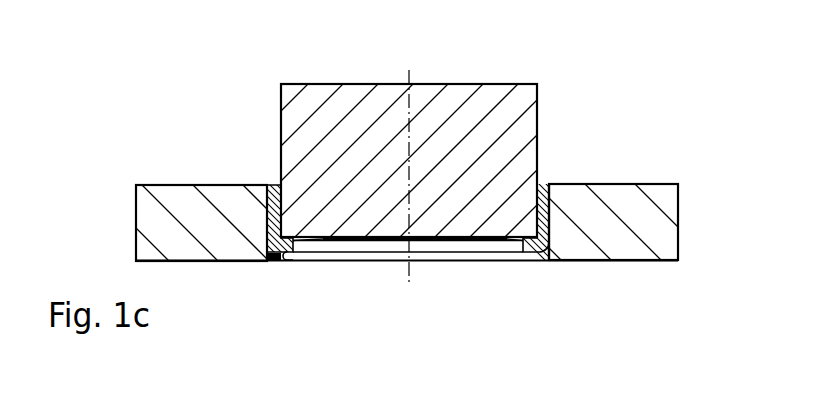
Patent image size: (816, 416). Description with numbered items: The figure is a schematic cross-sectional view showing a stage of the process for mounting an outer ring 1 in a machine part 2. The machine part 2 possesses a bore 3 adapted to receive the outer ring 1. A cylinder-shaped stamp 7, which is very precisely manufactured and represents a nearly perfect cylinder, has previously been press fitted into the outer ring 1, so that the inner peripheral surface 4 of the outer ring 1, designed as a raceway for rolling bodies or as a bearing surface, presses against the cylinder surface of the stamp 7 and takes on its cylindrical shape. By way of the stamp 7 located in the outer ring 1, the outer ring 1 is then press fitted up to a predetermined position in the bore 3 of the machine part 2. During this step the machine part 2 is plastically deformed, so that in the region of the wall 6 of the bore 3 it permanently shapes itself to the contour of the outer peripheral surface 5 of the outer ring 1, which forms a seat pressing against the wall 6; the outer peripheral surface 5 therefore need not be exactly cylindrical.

The outer ring 1 is at (543, 200).
The machine part 2 is at (619, 220).
The bore 3 is at (500, 262).
The inner peripheral surface 4 is at (537, 213).
The outer peripheral surface 5 is at (549, 214).
The wall 6 is at (283, 260).
The stamp 7 is at (367, 125).